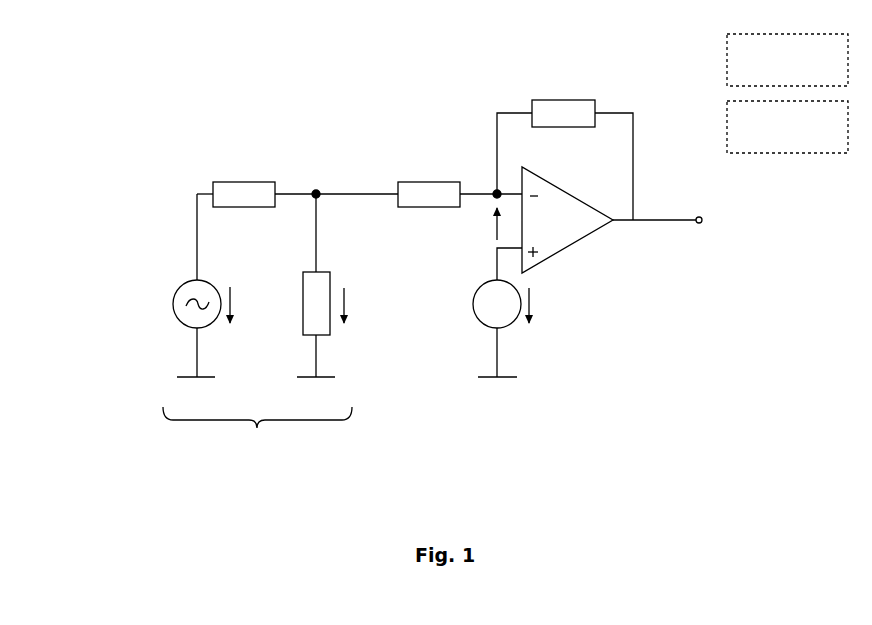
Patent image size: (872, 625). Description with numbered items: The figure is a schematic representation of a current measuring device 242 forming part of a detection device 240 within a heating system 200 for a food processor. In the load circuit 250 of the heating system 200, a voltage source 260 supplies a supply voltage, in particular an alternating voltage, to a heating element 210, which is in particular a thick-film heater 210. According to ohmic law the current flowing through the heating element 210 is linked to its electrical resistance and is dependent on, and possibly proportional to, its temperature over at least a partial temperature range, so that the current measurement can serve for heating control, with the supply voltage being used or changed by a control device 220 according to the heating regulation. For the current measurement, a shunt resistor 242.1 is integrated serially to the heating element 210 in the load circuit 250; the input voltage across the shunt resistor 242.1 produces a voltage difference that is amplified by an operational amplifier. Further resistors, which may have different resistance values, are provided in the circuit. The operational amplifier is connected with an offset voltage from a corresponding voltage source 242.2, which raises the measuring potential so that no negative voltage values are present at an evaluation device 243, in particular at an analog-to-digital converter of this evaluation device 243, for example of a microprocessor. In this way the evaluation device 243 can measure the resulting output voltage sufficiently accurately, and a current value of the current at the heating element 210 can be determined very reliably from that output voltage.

The heating system 200 is at (110, 68).
The heating element 210 is at (243, 182).
The control device 220 is at (803, 71).
The detection device 240 is at (325, 92).
The current measuring device 242 is at (667, 410).
The shunt resistor 242.1 is at (330, 328).
The voltage source 242.2 is at (540, 342).
The evaluation device 243 is at (803, 138).
The load circuit 250 is at (257, 434).
The voltage source 260 is at (173, 304).